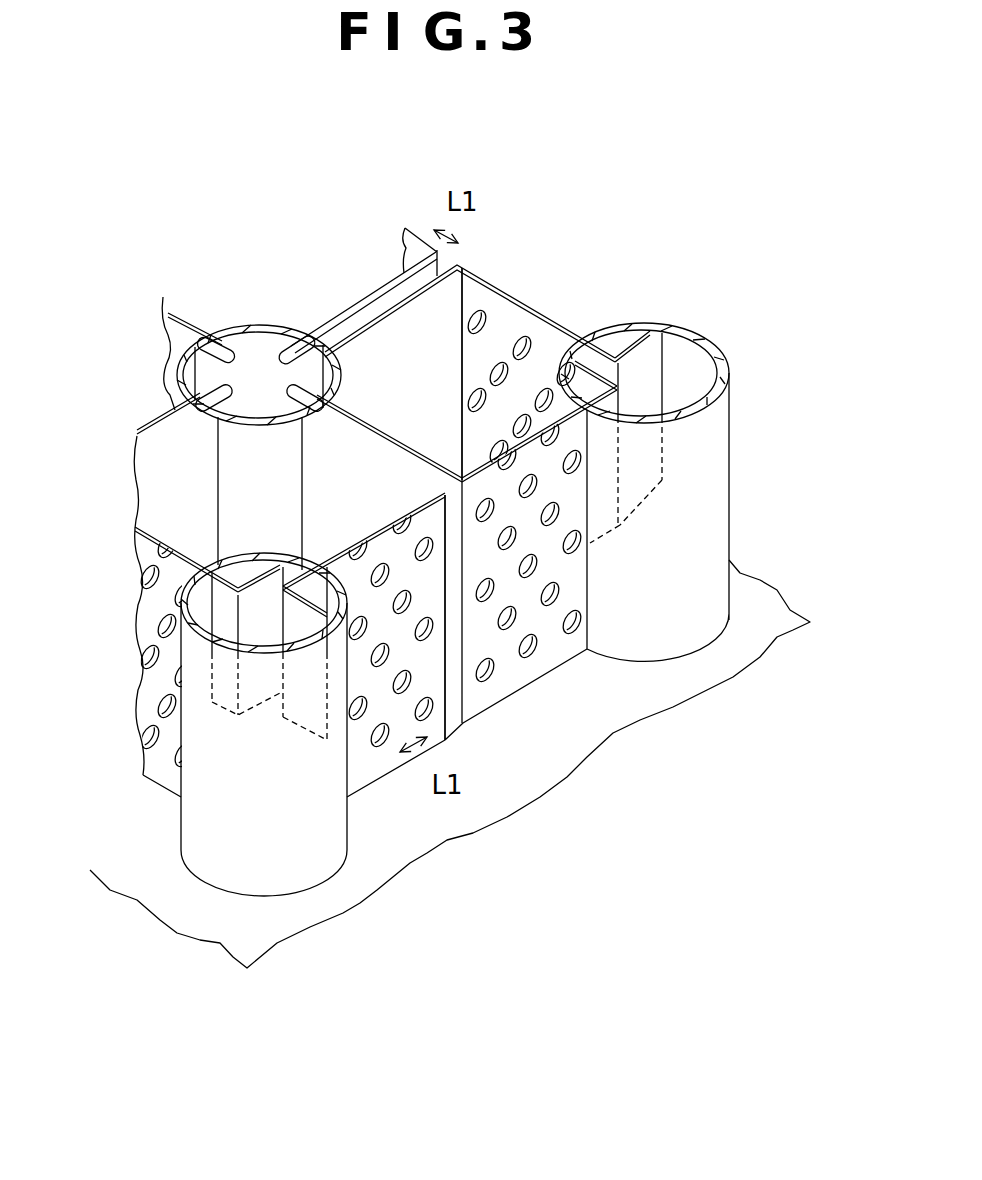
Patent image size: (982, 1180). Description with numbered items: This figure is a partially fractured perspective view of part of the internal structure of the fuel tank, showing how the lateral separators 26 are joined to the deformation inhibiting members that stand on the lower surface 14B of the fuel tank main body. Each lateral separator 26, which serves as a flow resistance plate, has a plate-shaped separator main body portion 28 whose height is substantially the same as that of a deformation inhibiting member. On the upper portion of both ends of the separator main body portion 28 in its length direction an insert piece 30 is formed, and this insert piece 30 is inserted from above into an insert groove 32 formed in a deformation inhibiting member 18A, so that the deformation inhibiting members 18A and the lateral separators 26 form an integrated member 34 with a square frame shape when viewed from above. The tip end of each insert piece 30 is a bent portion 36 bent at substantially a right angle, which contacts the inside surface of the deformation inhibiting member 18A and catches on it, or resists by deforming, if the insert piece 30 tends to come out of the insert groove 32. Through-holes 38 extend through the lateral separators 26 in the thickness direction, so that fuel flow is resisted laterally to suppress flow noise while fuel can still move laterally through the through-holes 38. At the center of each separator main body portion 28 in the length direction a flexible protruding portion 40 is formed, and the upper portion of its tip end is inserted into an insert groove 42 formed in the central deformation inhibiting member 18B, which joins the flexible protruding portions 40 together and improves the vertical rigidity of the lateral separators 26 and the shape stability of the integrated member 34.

The lower surface 14B is at (507, 790).
The deformation inhibiting member 18A is at (712, 340).
The deformation inhibiting member 18B is at (260, 323).
The lateral separator 26 is at (316, 535).
The separator main body portion 28 is at (342, 532).
The insert piece 30 is at (437, 504).
The insert groove 32 is at (416, 455).
The integrated member 34 is at (505, 212).
The bent portion 36 is at (458, 552).
The through-hole 38 is at (367, 549).
The flexible protruding portion 40 is at (359, 422).
The insert groove 42 is at (253, 385).